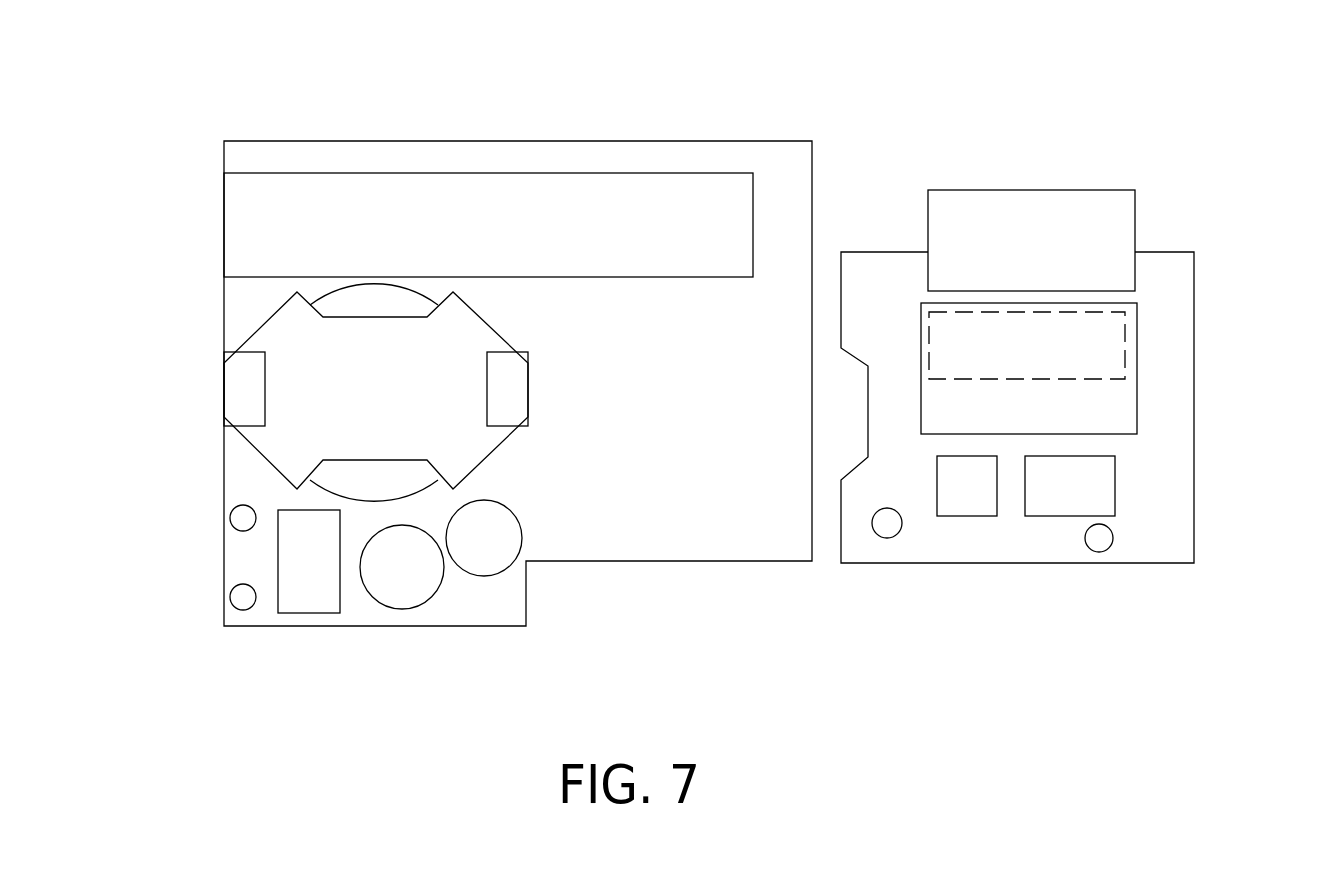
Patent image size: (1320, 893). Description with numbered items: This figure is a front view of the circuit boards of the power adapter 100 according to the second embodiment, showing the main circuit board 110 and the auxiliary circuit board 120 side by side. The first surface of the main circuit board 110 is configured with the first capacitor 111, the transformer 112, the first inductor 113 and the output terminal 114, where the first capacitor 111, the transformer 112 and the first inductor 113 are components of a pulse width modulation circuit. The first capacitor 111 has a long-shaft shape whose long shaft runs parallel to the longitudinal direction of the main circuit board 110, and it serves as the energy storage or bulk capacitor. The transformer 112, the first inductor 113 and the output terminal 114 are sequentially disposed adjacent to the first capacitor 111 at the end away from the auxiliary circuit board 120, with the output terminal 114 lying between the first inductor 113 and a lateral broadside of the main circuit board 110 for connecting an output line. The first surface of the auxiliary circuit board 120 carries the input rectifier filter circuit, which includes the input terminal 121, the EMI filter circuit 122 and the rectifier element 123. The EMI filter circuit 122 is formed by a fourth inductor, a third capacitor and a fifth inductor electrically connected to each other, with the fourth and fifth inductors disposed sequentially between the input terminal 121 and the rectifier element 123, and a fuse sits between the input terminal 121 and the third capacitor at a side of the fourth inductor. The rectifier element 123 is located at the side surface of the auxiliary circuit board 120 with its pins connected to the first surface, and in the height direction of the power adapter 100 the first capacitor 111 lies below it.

The power adapter 100 is at (42, 46).
The main circuit board 110 is at (623, 502).
The first capacitor 111 is at (315, 218).
The transformer 112 is at (312, 400).
The first inductor 113 is at (310, 588).
The output terminal 114 is at (174, 557).
The auxiliary circuit board 120 is at (1180, 508).
The input terminal 121 is at (992, 603).
The EMI filter circuit 122 is at (1078, 470).
The rectifier element 123 is at (1072, 223).